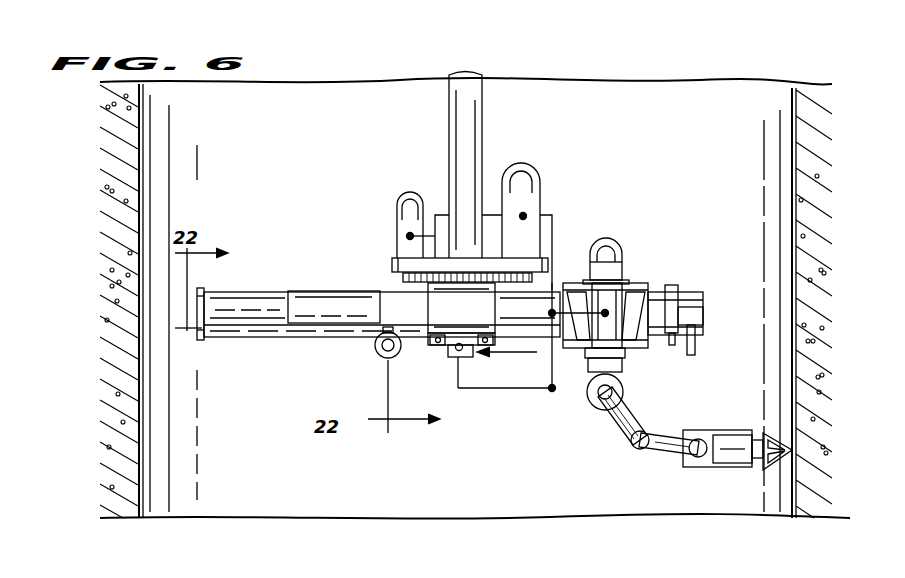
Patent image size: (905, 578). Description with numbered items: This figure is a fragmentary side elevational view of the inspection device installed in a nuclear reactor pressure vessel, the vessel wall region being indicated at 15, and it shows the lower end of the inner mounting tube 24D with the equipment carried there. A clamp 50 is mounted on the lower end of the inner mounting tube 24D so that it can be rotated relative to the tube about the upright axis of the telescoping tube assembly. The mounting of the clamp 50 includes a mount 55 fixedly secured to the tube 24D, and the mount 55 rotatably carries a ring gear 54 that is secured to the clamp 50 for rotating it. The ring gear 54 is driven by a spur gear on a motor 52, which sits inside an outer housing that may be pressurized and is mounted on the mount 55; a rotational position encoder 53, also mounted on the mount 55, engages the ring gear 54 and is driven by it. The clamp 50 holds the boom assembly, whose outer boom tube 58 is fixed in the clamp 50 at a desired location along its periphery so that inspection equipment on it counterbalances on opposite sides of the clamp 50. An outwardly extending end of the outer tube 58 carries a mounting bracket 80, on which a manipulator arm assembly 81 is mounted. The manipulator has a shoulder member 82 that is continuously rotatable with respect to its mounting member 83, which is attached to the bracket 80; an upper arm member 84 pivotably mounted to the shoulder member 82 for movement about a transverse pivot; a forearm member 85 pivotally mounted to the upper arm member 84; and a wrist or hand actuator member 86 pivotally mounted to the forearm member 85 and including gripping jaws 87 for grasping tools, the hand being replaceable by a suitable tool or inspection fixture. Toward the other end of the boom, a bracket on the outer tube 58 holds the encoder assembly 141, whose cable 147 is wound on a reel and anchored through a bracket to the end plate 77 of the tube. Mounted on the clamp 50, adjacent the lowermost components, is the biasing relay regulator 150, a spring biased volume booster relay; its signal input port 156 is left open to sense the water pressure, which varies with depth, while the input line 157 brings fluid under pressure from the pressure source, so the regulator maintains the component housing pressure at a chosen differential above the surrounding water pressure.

The hole / shaft wall 15 is at (715, 110).
The inner mounting tube 24D is at (490, 165).
The motor 52 is at (540, 204).
The rotational position encoder 53 is at (397, 233).
The mount 55 is at (392, 265).
The ring gear 54 is at (403, 277).
The outer boom tube 58 is at (556, 288).
The mounting member 83 is at (608, 290).
The mounting bracket 80 is at (641, 283).
The clamp 50 is at (474, 316).
The end plate 77 is at (204, 338).
The cable 147 is at (325, 338).
The encoder assembly 141 is at (384, 360).
The signal input port 156 is at (455, 352).
The input line 157 is at (522, 355).
The biasing relay regulator 150 is at (468, 357).
The shoulder member 82 is at (588, 374).
The upper arm member 84 is at (627, 415).
The manipulator arm assembly 81 is at (618, 442).
The forearm member 85 is at (673, 457).
The hand actuator member 86 is at (742, 468).
The gripping jaws 87 is at (769, 432).